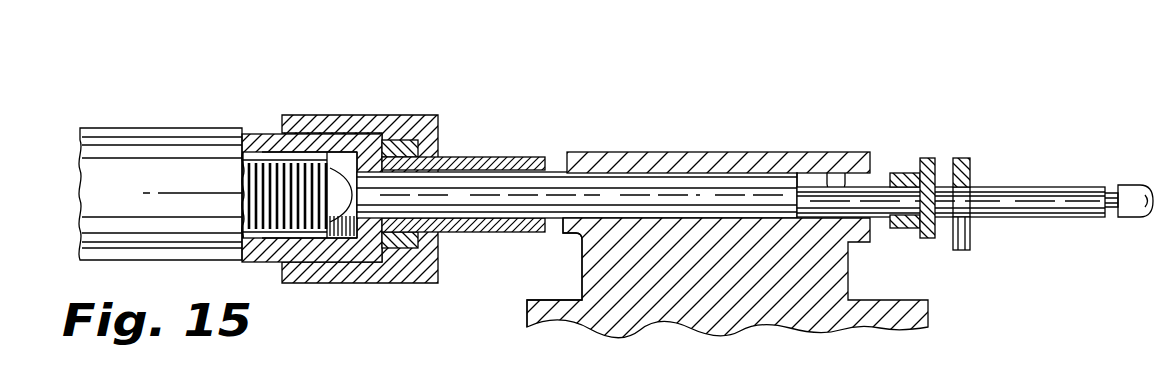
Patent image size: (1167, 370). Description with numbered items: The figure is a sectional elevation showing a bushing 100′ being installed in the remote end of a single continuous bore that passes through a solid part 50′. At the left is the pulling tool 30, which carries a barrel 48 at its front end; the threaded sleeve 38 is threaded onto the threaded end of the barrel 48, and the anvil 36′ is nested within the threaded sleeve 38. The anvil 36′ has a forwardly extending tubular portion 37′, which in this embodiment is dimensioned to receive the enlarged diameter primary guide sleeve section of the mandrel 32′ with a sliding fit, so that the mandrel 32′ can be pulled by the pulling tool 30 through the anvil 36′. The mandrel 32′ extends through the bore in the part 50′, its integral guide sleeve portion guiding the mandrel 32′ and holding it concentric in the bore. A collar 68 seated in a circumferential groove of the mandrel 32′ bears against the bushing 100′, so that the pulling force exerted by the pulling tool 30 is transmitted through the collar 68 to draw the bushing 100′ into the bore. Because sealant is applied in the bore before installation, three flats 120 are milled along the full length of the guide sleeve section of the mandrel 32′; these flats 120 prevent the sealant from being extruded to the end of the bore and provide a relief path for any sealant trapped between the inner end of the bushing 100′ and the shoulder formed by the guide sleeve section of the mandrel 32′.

The pulling tool 30 is at (162, 118).
The barrel 48 is at (257, 132).
The threaded sleeve 38 is at (352, 115).
The anvil 36′ is at (452, 144).
The tubular portion 37′ is at (505, 157).
The flats 120 is at (668, 177).
The bushing 100′ is at (927, 157).
The collar 68 is at (963, 157).
The mandrel 32′ is at (1065, 187).
The solid part 50′ is at (862, 266).